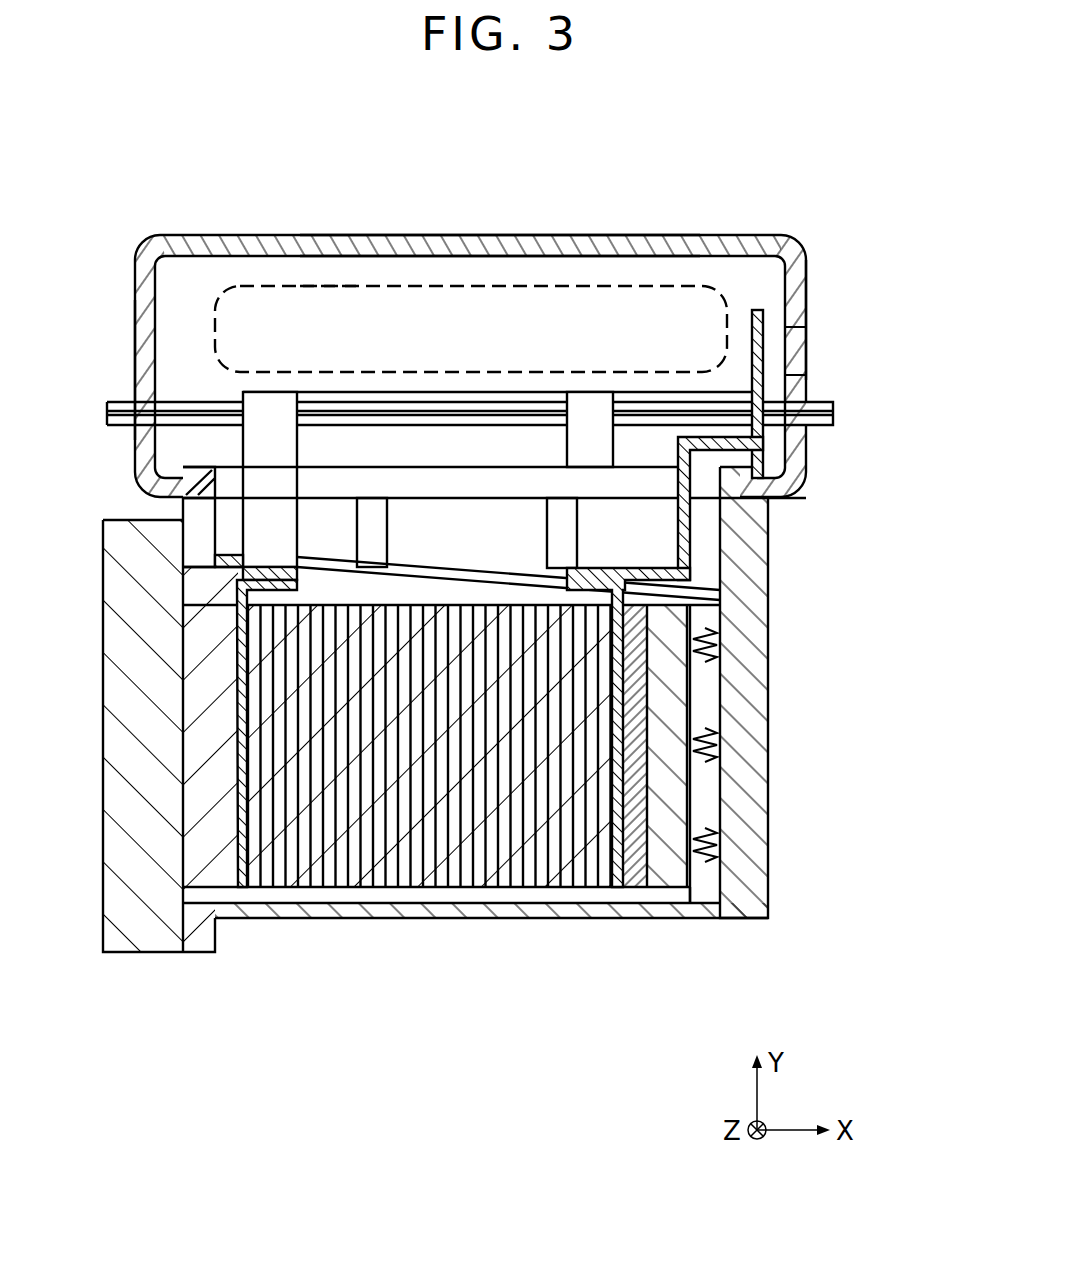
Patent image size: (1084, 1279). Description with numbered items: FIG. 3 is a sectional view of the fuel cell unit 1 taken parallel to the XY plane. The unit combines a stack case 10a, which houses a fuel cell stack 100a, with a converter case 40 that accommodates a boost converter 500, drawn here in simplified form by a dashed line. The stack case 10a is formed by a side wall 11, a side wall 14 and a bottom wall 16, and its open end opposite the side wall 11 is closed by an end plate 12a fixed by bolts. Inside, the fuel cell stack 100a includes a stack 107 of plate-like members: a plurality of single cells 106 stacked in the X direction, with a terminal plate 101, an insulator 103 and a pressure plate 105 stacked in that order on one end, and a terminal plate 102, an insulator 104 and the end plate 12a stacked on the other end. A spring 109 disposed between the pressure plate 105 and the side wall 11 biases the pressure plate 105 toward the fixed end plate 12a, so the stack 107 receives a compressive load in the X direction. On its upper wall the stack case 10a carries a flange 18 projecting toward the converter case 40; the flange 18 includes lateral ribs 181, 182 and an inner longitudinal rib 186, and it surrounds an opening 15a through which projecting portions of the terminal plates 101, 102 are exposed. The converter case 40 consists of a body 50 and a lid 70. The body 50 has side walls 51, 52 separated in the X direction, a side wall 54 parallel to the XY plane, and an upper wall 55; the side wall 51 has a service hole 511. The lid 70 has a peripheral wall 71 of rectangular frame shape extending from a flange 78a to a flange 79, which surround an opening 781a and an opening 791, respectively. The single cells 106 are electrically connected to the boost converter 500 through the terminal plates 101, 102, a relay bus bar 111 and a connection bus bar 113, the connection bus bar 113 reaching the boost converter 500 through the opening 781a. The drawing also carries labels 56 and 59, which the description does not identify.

The fuel cell unit 1 is at (498, 602).
The boost converter 500 is at (258, 286).
The side wall 54 is at (312, 283).
The upper wall 55 is at (458, 245).
The inner space of case 56 is at (585, 275).
The opening 781a is at (643, 480).
The opening 791 is at (700, 410).
The connection bus bar 113 is at (753, 310).
The side wall 51 is at (797, 312).
The service hole 511 is at (796, 354).
The rod through-hole 59 is at (812, 404).
The body 50 is at (806, 248).
The converter case 40 is at (518, 332).
The lid 70 is at (810, 488).
The peripheral wall 71 is at (147, 478).
The side wall 52 is at (142, 290).
The relay bus bar 111 is at (270, 432).
The flange 79 is at (107, 413).
The flange 78a is at (207, 522).
The flange 18 is at (196, 537).
The lateral rib 182 is at (195, 560).
The lateral rib 181 is at (757, 574).
The opening 15a is at (700, 590).
The inner longitudinal rib 186 is at (657, 540).
The side wall 11 is at (755, 795).
The spring 109 is at (715, 838).
The stack case 10a is at (772, 900).
The end plate 12a is at (140, 935).
The insulator 104 is at (207, 860).
The side wall 14 is at (233, 893).
The terminal plate 102 is at (248, 867).
The single cells 106 is at (333, 875).
The bottom wall 16 is at (398, 913).
The fuel cell stack 100a is at (441, 895).
The terminal plate 101 is at (612, 887).
The insulator 103 is at (632, 877).
The pressure plate 105 is at (696, 815).
The stack 107 is at (448, 792).